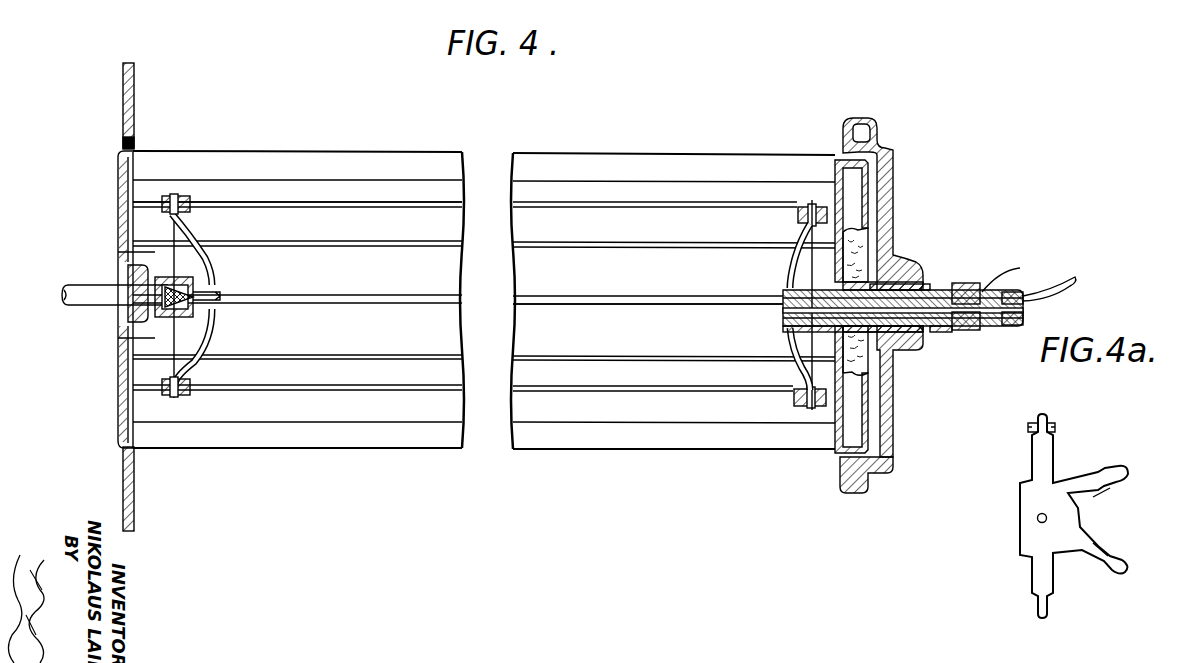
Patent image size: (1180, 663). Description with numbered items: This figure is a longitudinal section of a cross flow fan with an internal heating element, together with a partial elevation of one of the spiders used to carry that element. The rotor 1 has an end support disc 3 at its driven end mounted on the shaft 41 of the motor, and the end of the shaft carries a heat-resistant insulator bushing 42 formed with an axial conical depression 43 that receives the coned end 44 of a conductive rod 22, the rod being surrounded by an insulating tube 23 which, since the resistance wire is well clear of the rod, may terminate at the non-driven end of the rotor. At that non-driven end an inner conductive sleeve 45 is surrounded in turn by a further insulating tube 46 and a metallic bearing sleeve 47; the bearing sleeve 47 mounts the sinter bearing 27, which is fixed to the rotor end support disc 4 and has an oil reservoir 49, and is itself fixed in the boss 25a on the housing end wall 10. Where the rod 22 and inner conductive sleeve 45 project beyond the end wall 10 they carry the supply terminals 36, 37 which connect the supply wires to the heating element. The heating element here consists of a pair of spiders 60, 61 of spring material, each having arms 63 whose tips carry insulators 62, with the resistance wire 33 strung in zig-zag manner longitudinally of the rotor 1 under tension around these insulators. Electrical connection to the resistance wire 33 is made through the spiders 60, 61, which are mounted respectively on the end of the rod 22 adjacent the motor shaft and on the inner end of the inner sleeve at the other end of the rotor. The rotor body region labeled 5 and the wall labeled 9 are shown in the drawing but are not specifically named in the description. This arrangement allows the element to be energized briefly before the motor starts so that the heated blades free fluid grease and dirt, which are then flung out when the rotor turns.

In FIG. 4, the rotor 1 is at (590, 182).
In FIG. 4, the end support disc 3 is at (118, 182).
In FIG. 4, the rotor end support disc 4 is at (845, 187).
In FIG. 4, the tube body 5 is at (358, 287).
In FIG. 4, the wall 9 is at (123, 104).
In FIG. 4, the housing end wall 10 is at (890, 148).
In FIG. 4, the conductive rod 22 is at (538, 305).
In FIG. 4, the insulating tube 23 is at (950, 328).
In FIG. 4, the boss 25a is at (937, 290).
In FIG. 4, the sinter bearing 27 is at (846, 286).
In FIG. 4, the resistance wire 33 is at (343, 205).
In FIG. 4, the terminal 36 is at (1047, 280).
In FIG. 4, the terminal 37 is at (992, 285).
In FIG. 4, the shaft 41 is at (85, 300).
In FIG. 4, the heat-resistant insulator bushing 42 is at (168, 316).
In FIG. 4, the axial conical depression 43 is at (172, 277).
In FIG. 4, the coned end 44 is at (200, 303).
In FIG. 4, the inner conductive sleeve 45 is at (950, 290).
In FIG. 4, the insulating tube 46 is at (920, 332).
In FIG. 4, the metallic bearing sleeve 47 is at (945, 288).
In FIG. 4, the oil reservoir 49 is at (858, 352).
In FIG. 4, the spider 60 is at (200, 250).
In FIG. 4A, the spider 60 is at (1055, 487).
In FIG. 4, the spider 61 is at (800, 265).
In FIG. 4, the insulator 62 is at (165, 194).
In FIG. 4A, the insulator 62 is at (1053, 428).
In FIG. 4A, the arms 63 is at (1093, 545).